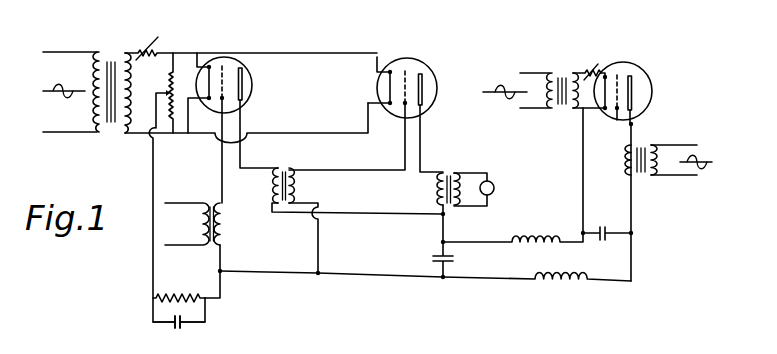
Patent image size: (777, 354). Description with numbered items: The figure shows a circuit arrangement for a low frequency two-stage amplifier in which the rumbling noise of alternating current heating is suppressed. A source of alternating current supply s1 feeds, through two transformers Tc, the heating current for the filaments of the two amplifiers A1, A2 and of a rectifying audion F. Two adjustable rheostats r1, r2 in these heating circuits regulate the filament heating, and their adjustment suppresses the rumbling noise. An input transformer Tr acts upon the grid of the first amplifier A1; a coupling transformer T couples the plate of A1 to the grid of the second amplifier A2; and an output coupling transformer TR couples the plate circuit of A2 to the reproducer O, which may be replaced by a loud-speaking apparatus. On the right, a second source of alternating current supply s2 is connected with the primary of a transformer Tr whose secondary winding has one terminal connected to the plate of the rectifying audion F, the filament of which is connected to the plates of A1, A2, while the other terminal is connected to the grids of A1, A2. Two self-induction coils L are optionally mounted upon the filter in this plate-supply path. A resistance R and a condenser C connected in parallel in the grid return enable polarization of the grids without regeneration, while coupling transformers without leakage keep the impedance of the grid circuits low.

The source of alternating current supply s1 is at (296, 89).
The filament heating transformer Tc is at (335, 83).
The adjustable rheostat r1 is at (251, 40).
The first amplifier A1 is at (220, 79).
The second amplifier A2 is at (402, 72).
The coupling transformer T is at (284, 175).
The output coupling transformer TR is at (448, 177).
The reproducer O is at (477, 183).
The self-induction coil L is at (537, 206).
The adjustable rheostat r2 is at (589, 76).
The rectifying audion F is at (623, 79).
The transformer Tr is at (407, 195).
The source of alternating current supply s2 is at (681, 161).
The resistance R is at (179, 285).
The condenser C is at (179, 331).